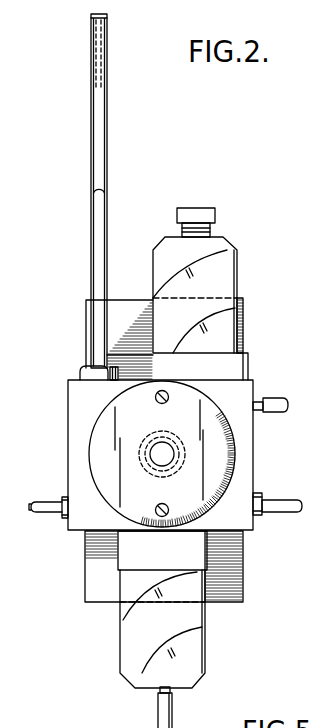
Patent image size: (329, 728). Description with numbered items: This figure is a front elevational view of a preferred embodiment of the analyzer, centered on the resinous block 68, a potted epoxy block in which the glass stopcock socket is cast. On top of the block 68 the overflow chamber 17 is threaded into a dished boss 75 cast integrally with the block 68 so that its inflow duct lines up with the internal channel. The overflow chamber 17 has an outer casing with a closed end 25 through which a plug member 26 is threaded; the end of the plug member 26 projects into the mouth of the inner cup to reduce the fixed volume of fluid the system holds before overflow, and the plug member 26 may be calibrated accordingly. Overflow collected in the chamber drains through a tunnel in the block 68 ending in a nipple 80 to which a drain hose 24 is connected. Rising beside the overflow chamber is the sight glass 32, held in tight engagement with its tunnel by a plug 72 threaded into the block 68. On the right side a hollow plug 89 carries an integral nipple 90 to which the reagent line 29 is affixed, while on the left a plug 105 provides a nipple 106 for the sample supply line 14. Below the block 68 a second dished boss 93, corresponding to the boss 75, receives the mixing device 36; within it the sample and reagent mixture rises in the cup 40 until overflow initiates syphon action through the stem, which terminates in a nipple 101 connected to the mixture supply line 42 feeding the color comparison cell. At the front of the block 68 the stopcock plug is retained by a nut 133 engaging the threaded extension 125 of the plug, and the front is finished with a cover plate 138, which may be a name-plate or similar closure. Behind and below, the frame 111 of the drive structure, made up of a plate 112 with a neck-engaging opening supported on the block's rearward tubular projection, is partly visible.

The sample supply line 14 is at (41, 503).
The overflow chamber 17 is at (276, 273).
The drain hose 24 is at (303, 392).
The closed end of casing 25 is at (228, 333).
The plug member 26 is at (205, 208).
The reagent line 29 is at (302, 505).
The sight glass 32 is at (107, 193).
The mixing device 36 is at (258, 639).
The cup 40 is at (132, 656).
The mixture supply line 42 is at (158, 710).
The resinous block 68 is at (250, 468).
The plug 72 is at (84, 374).
The dished boss 75 is at (240, 362).
The nipple 80 is at (258, 400).
The hollow plug 89 is at (262, 493).
The nipple 90 is at (260, 518).
The dished boss 93 is at (130, 556).
The nipple 101 is at (157, 692).
The plug 105 is at (63, 497).
The nipple 106 is at (60, 517).
The frame 111 is at (93, 577).
The plate 112 is at (243, 573).
The threaded extension 125 is at (147, 471).
The nut 133 is at (146, 436).
The cover plate 138 is at (112, 416).